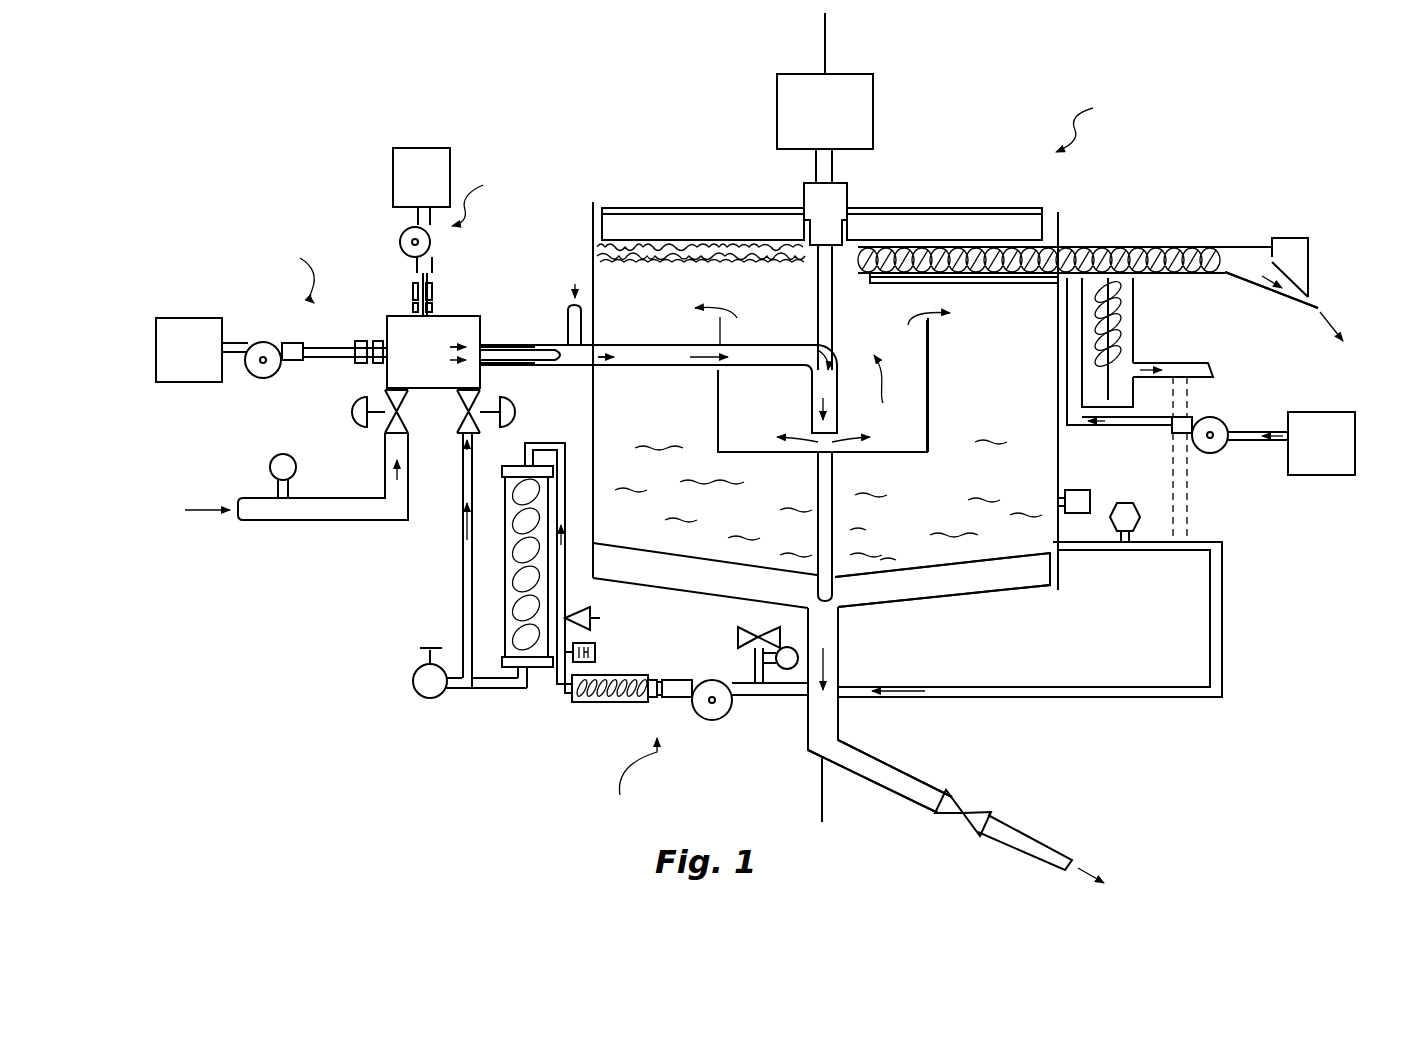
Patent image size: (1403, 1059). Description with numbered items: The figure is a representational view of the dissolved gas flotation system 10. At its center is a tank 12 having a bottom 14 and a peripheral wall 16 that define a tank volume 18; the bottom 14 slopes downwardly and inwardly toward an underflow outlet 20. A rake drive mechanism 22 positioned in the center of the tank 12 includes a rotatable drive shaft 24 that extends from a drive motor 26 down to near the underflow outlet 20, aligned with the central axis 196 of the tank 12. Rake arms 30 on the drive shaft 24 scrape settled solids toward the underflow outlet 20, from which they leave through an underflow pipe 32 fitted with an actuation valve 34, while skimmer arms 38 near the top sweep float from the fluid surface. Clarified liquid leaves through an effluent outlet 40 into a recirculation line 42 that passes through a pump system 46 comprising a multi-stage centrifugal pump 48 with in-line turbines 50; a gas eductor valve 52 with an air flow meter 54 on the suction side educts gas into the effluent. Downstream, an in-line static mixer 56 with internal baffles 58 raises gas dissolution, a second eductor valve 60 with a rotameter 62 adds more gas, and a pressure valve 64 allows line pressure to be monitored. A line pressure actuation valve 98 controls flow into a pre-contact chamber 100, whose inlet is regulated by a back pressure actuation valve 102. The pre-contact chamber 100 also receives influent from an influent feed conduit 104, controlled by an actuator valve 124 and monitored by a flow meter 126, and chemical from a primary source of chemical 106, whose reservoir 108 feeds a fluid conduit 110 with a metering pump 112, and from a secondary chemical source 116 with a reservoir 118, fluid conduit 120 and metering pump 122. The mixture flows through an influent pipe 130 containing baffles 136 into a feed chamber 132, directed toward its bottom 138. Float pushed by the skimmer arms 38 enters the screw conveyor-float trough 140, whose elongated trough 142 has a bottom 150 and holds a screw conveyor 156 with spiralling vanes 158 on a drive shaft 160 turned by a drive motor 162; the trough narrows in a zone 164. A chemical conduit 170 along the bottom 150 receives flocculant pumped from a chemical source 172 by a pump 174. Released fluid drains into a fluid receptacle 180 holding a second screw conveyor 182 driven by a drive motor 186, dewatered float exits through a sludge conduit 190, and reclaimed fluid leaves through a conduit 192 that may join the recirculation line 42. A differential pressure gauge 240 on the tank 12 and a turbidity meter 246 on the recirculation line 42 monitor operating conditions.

The dissolved gas flotation system 10 is at (1091, 120).
The tank 12 is at (593, 215).
The bottom 14 is at (990, 600).
The peripheral wall 16 is at (592, 425).
The tank volume 18 is at (946, 501).
The underflow outlet 20 is at (835, 625).
The rake drive mechanism 22 is at (832, 170).
The rotatable drive shaft 24 is at (818, 290).
The drive motor 26 is at (862, 102).
The rake arms 30 is at (692, 580).
The underflow pipe 32 is at (875, 765).
The actuation valve 34 is at (962, 798).
The skimmer arms 38 is at (703, 222).
The effluent outlet 40 is at (1063, 560).
The recirculation line 42 is at (566, 470).
The pump system 46 is at (633, 777).
The multi-stage centrifugal pump 48 is at (712, 720).
The in-line turbines 50 is at (600, 703).
The gas eductor valve 52 is at (740, 633).
The air flow meter 54 is at (783, 670).
The in-line static mixer 56 is at (518, 458).
The internal baffles 58 is at (505, 548).
The second eductor valve 60 is at (598, 643).
The rotameter 62 is at (597, 655).
The pressure valve 64 is at (600, 606).
The line pressure actuation valve 98 is at (440, 697).
The pre-contact chamber 100 is at (455, 318).
The back pressure actuation valve 102 is at (513, 400).
The influent feed conduit 104 is at (312, 522).
The primary source of chemical 106 is at (287, 272).
The reservoir 108 is at (175, 325).
The fluid conduit 110 is at (362, 343).
The metering pump 112 is at (283, 345).
The secondary chemical source 116 is at (493, 198).
The reservoir 118 is at (393, 165).
The fluid conduit 120 is at (432, 287).
The metering pump 122 is at (403, 243).
The actuator valve 124 is at (350, 412).
The flow meter 126 is at (272, 460).
The influent pipe 130 is at (691, 319).
The feed chamber 132 is at (718, 418).
The baffles 136 is at (535, 348).
The bottom of the feed chamber 138 is at (745, 443).
The screw conveyor-float trough 140 is at (1132, 232).
The elongated trough 142 is at (861, 363).
The bottom 150 is at (1000, 283).
The screw conveyor 156 is at (1150, 250).
The spiralling vanes 158 is at (1080, 250).
The drive shaft 160 is at (1235, 260).
The drive motor 162 is at (1300, 245).
The zone 164 is at (1178, 276).
The chemical conduit 170 is at (960, 285).
The chemical source 172 is at (1330, 478).
The pump 174 is at (1220, 425).
The fluid receptacle 180 is at (1135, 295).
The second screw conveyor 182 is at (1120, 337).
The drive motor 186 is at (1127, 408).
The sludge conduit 190 is at (1310, 310).
The conduit 192 is at (575, 286).
The central axis 196 is at (826, 46).
The differential pressure gauge 240 is at (1065, 492).
The turbidity meter 246 is at (1150, 500).